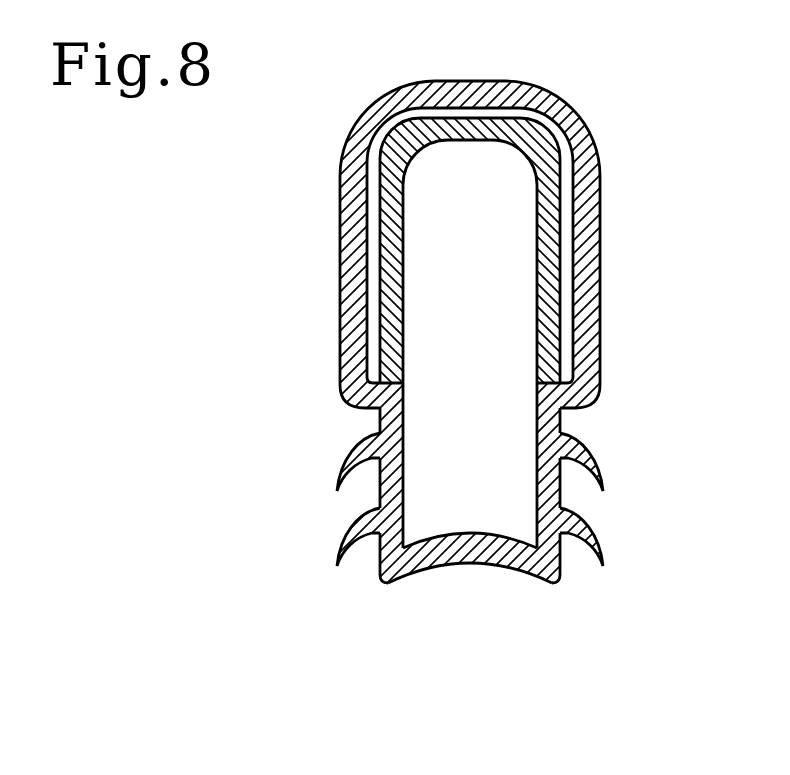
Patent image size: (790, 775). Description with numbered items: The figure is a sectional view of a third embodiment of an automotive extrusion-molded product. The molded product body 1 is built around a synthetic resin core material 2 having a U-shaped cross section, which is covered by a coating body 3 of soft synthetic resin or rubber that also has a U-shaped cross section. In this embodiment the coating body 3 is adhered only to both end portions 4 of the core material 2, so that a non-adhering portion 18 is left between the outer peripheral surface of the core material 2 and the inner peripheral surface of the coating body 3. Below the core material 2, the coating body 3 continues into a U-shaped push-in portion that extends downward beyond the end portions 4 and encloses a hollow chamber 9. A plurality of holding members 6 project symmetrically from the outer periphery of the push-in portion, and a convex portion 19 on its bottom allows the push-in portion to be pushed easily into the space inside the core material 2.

The molded product body 1 is at (381, 104).
The core material 2 is at (528, 150).
The coating body 3 is at (351, 228).
The end portions 4 is at (569, 407).
The holding members 6 is at (366, 452).
The hollow chamber 9 is at (420, 476).
The non-adhering portion 18 is at (568, 272).
The convex portion 19 is at (473, 563).